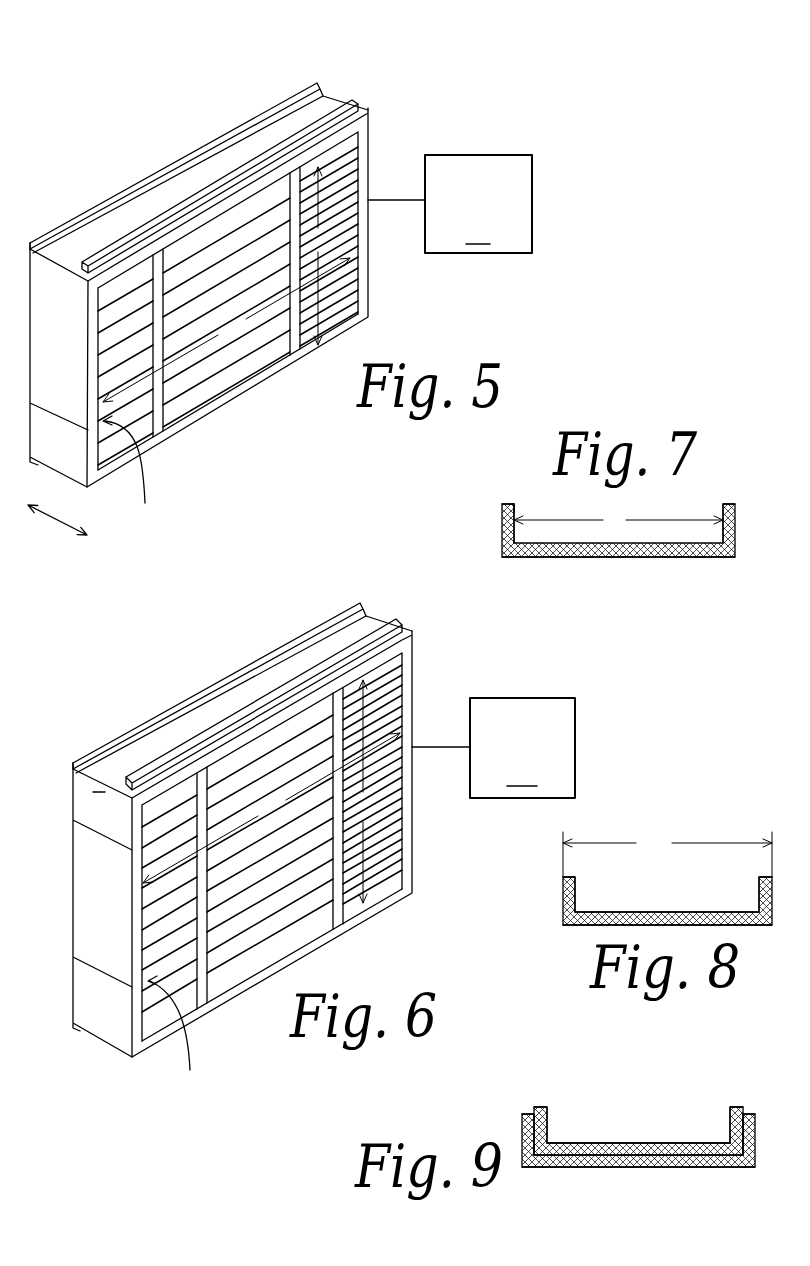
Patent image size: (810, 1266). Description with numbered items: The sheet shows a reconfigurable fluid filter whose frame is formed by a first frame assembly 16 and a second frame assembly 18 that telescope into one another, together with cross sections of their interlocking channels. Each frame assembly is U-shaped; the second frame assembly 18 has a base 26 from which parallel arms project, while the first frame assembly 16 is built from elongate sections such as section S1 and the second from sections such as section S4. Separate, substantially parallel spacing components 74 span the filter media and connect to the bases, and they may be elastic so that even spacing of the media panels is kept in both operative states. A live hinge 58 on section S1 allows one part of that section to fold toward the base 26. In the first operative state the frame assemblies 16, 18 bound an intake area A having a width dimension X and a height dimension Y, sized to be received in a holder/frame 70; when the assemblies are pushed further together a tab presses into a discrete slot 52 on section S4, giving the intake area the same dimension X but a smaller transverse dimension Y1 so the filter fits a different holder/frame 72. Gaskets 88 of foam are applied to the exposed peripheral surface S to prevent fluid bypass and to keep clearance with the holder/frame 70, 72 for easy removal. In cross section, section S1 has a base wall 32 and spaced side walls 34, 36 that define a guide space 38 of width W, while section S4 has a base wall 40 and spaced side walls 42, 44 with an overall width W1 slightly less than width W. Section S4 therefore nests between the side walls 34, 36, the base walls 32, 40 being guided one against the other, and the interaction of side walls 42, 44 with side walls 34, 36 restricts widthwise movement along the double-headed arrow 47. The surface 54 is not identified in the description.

In FIG. 5, the first frame assembly 16 is at (87, 487).
In FIG. 6, the first frame assembly 16 is at (123, 1033).
In FIG. 5, the second frame assembly 18 is at (160, 200).
In FIG. 6, the second frame assembly 18 is at (153, 753).
In FIG. 5, the base 26 is at (210, 162).
In FIG. 5, the gaskets 88 is at (294, 100).
In FIG. 6, the gaskets 88 is at (333, 668).
In FIG. 5, the spacing components 74 is at (294, 342).
In FIG. 6, the spacing components 74 is at (338, 902).
In FIG. 5, the live hinge 58 is at (100, 495).
In FIG. 6, the live hinge 58 is at (103, 975).
In FIG. 5, the double-headed arrow 47 is at (60, 520).
In FIG. 5, the holder/frame 72 is at (450, 204).
In FIG. 6, the holder/frame 70 is at (493, 748).
In FIG. 6, the discrete slot 52 is at (98, 790).
In FIG. 7, the base wall 32 is at (615, 557).
In FIG. 9, the base wall 32 is at (635, 1167).
In FIG. 7, the side wall 34 is at (504, 520).
In FIG. 9, the side wall 34 is at (524, 1130).
In FIG. 7, the side wall 36 is at (737, 520).
In FIG. 9, the side wall 36 is at (757, 1135).
In FIG. 7, the guide space 38 is at (523, 513).
In FIG. 8, the base wall 40 is at (665, 912).
In FIG. 9, the base wall 40 is at (640, 1143).
In FIG. 8, the side wall 42 is at (578, 895).
In FIG. 9, the side wall 42 is at (545, 1125).
In FIG. 8, the side wall 44 is at (757, 895).
In FIG. 9, the side wall 44 is at (733, 1120).
In FIG. 8, the bottom surface 54 is at (575, 925).
In FIG. 6, the exposed peripheral surface S is at (252, 700).
In FIG. 7, the section S1 is at (565, 557).
In FIG. 9, the section S1 is at (590, 1167).
In FIG. 8, the section S4 is at (740, 925).
In FIG. 9, the section S4 is at (690, 1143).
In FIG. 7, the width W is at (618, 522).
In FIG. 8, the overall width W1 is at (667, 854).
In FIG. 5, the width dimension X is at (226, 330).
In FIG. 6, the width dimension X is at (271, 808).
In FIG. 6, the height dimension Y is at (362, 791).
In FIG. 5, the transverse dimension Y1 is at (321, 256).
In FIG. 5, the intake area A is at (128, 473).
In FIG. 6, the intake area A is at (171, 1035).